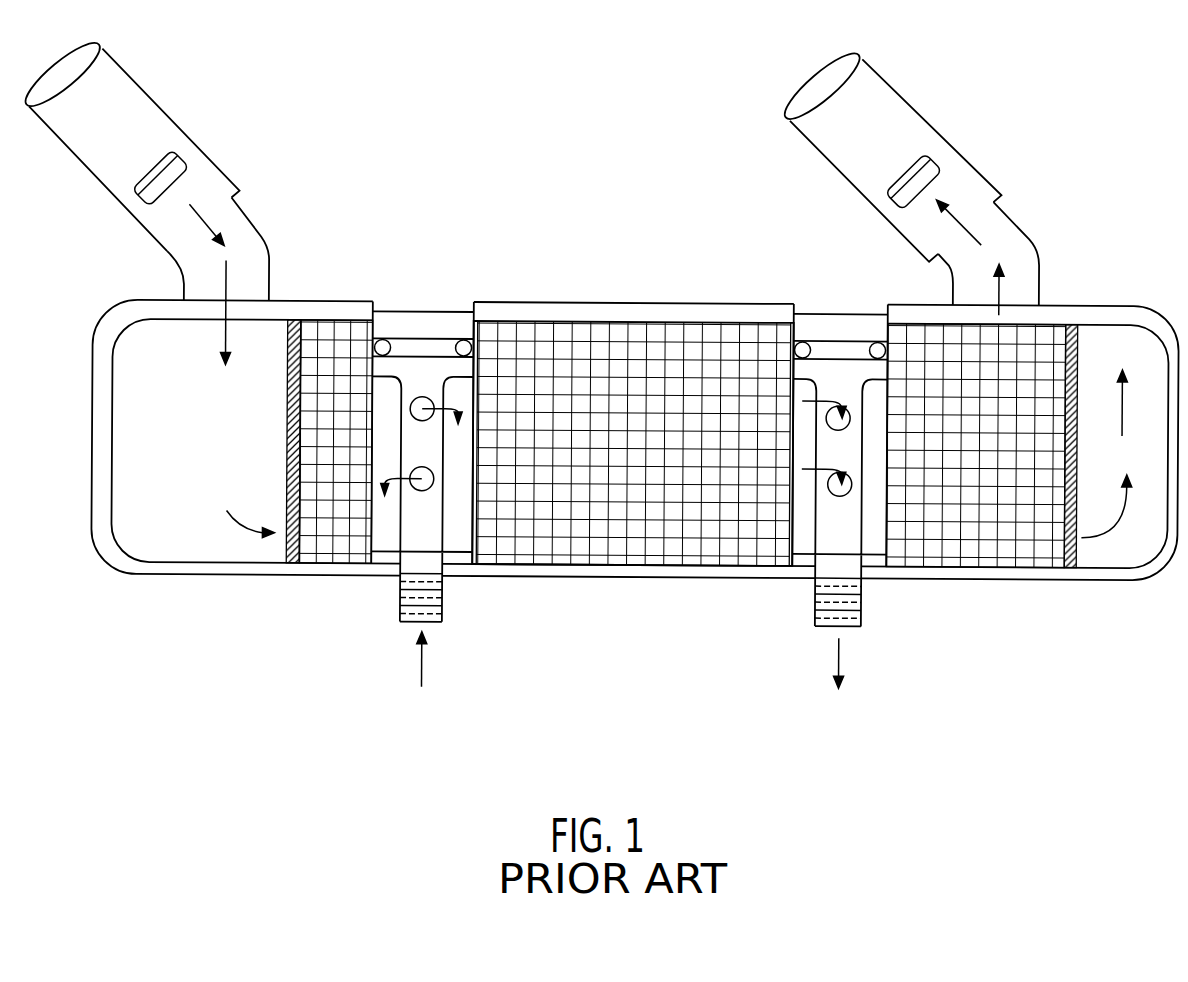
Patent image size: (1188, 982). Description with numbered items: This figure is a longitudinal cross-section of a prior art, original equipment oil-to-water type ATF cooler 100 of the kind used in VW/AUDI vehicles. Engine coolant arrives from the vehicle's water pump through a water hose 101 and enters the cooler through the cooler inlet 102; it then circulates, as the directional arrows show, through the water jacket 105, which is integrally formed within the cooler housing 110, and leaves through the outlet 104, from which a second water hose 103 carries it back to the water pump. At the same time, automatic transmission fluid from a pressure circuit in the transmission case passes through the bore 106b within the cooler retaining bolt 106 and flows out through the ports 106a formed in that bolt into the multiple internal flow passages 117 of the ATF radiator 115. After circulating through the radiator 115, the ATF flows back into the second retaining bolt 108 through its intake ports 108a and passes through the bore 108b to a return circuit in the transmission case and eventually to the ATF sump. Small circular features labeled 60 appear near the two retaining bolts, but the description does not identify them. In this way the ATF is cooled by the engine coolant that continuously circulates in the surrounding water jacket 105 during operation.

The ATF cooler 100 is at (616, 139).
The water hose 101 is at (162, 102).
The cooler inlet 102 is at (157, 170).
The water hose 103 is at (913, 110).
The outlet 104 is at (908, 163).
The water jacket 105 is at (228, 477).
The cooler retaining bolt 106 is at (422, 322).
The ports 106a is at (398, 503).
The bore 106b is at (433, 627).
The retaining bolt 108 is at (840, 320).
The intake ports 108a is at (848, 493).
The bore 108b is at (825, 628).
The cooler housing 110 is at (122, 563).
The ATF radiator 115 is at (608, 287).
The internal flow passages 117 is at (638, 543).
The tube 60 is at (385, 338).